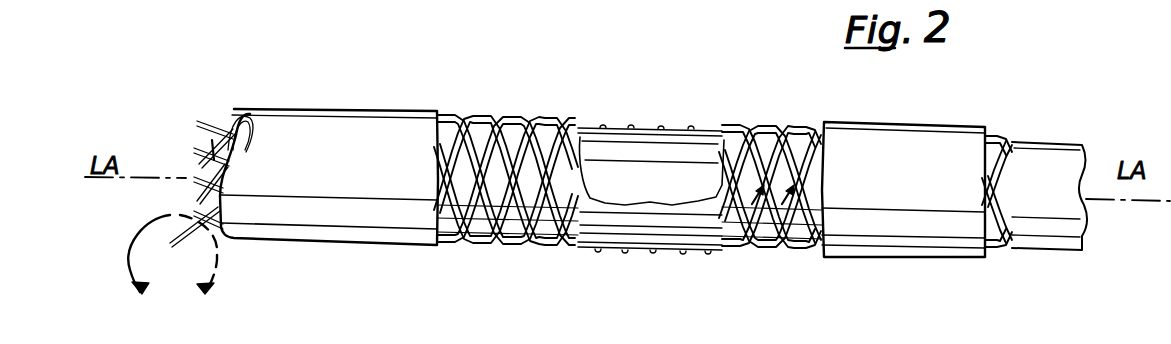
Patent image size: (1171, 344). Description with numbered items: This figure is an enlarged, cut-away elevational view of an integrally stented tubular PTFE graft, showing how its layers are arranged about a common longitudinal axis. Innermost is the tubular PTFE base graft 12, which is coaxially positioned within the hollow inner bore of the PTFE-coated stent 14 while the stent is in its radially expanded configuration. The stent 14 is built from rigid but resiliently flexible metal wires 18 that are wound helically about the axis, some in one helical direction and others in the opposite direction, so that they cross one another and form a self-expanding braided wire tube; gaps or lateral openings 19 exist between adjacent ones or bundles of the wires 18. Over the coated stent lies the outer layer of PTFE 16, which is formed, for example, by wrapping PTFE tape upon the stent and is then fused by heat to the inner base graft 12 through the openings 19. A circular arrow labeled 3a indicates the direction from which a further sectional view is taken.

The tubular PTFE base graft 12 is at (670, 160).
The PTFE-coated stent 14 is at (550, 122).
The outer layer of PTFE 16 is at (360, 125).
The wires 18 is at (209, 138).
The lateral openings 19 is at (758, 207).
The view direction arrow for FIG. 3a is at (172, 266).